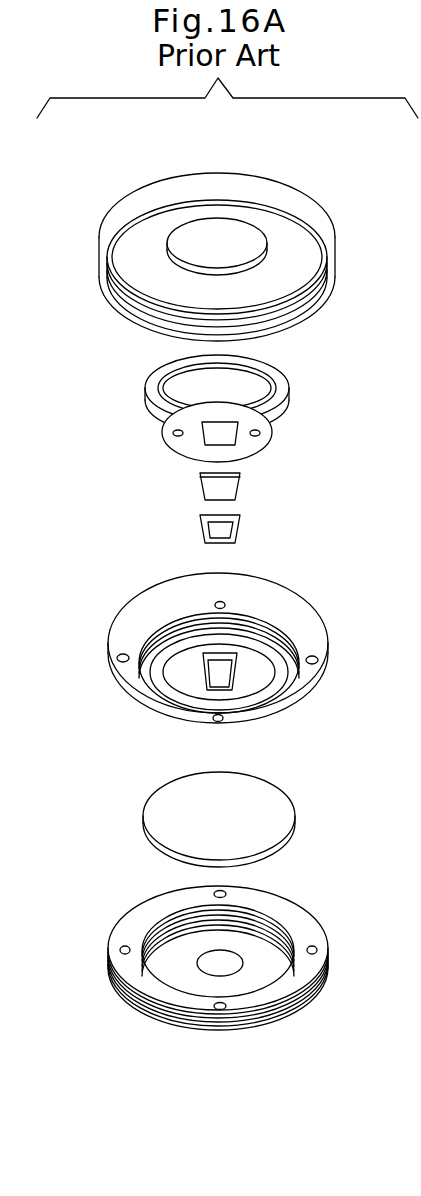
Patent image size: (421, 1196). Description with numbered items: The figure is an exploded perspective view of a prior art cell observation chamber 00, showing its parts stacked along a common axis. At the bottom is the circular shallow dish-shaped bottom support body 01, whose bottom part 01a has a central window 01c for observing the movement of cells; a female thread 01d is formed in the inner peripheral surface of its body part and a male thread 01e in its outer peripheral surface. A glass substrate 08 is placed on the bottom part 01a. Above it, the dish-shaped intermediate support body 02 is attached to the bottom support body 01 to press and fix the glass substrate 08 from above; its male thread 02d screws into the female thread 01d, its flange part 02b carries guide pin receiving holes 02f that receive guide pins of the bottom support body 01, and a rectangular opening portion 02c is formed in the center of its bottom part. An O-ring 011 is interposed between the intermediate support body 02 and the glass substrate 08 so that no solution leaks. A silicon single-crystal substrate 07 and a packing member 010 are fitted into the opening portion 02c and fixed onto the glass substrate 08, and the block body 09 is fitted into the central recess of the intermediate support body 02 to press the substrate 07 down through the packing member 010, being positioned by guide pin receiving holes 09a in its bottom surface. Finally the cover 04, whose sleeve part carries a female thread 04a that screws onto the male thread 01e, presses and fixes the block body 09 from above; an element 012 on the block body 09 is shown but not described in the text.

The cell observation chamber 00 is at (325, 190).
The cover 04 is at (221, 257).
The female thread 04a is at (110, 294).
The block body 09 is at (223, 407).
The guide pin receiving holes 09a is at (173, 436).
The cap step portion 012 is at (167, 388).
The packing member 010 is at (215, 487).
The substrate 07 is at (240, 530).
The intermediate support body 02 is at (227, 666).
The flange part 02b is at (113, 648).
The rectangular opening portion 02c is at (219, 676).
The male thread 02d is at (267, 623).
The guide pin receiving holes 02f is at (315, 665).
The O-ring 011 is at (152, 692).
The glass substrate 08 is at (295, 812).
The bottom support body 01 is at (226, 968).
The bottom part 01a is at (178, 976).
The window 01c is at (220, 963).
The female thread 01d is at (163, 913).
The male thread 01e is at (117, 983).